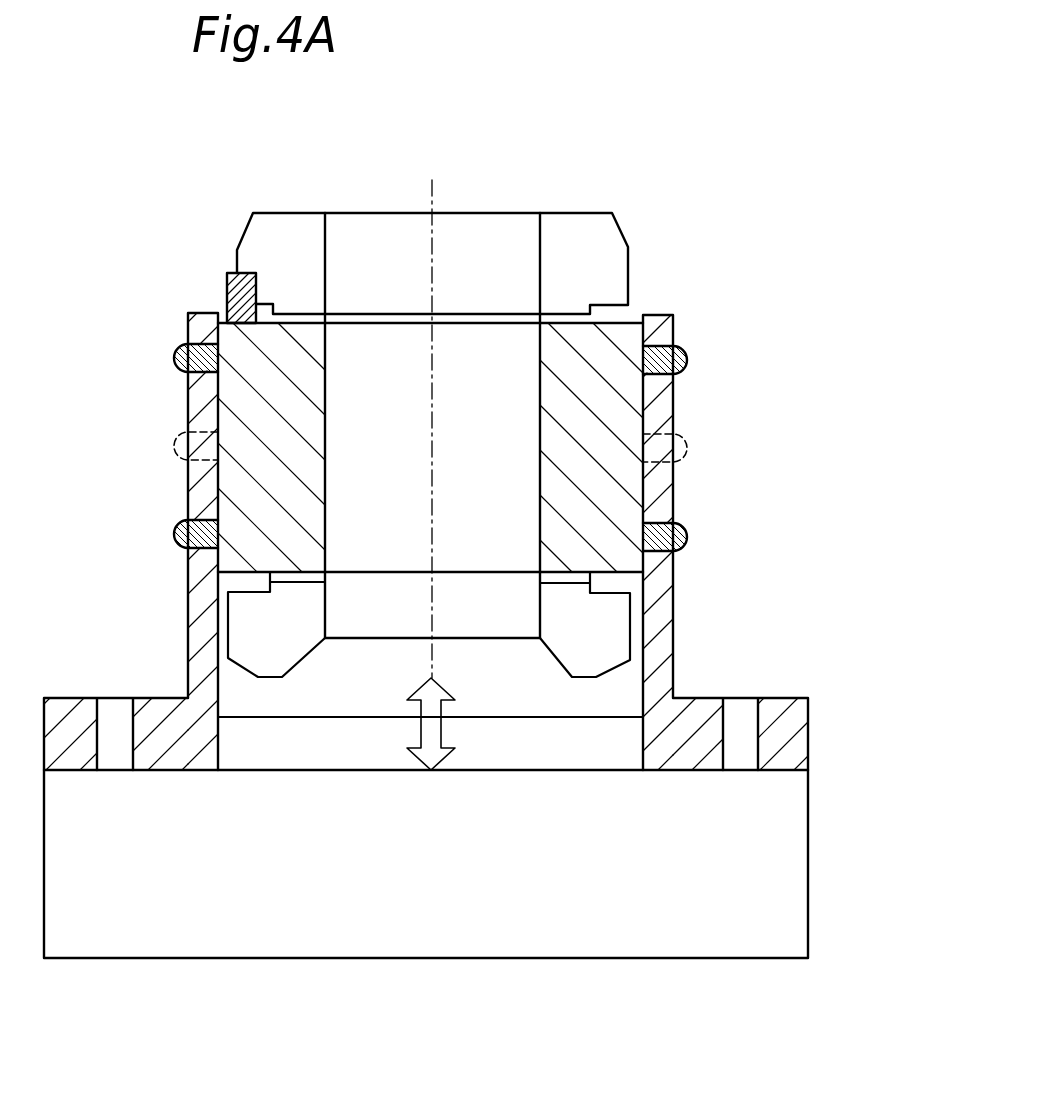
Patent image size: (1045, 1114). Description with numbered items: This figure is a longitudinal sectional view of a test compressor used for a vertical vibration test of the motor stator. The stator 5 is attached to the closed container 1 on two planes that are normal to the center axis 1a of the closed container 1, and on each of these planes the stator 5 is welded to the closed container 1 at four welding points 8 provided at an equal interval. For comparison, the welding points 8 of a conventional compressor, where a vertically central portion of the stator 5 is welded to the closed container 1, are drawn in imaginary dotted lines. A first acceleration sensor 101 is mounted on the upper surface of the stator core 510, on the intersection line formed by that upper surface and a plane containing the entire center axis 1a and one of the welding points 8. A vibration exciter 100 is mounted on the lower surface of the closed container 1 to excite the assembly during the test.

The closed container 1 is at (658, 587).
The center axis 1a is at (440, 250).
The stator 5 is at (573, 211).
The welding points 8 is at (175, 355).
The vibration exciter 100 is at (768, 871).
The first acceleration sensor 101 is at (248, 273).
The stator core 510 is at (608, 345).